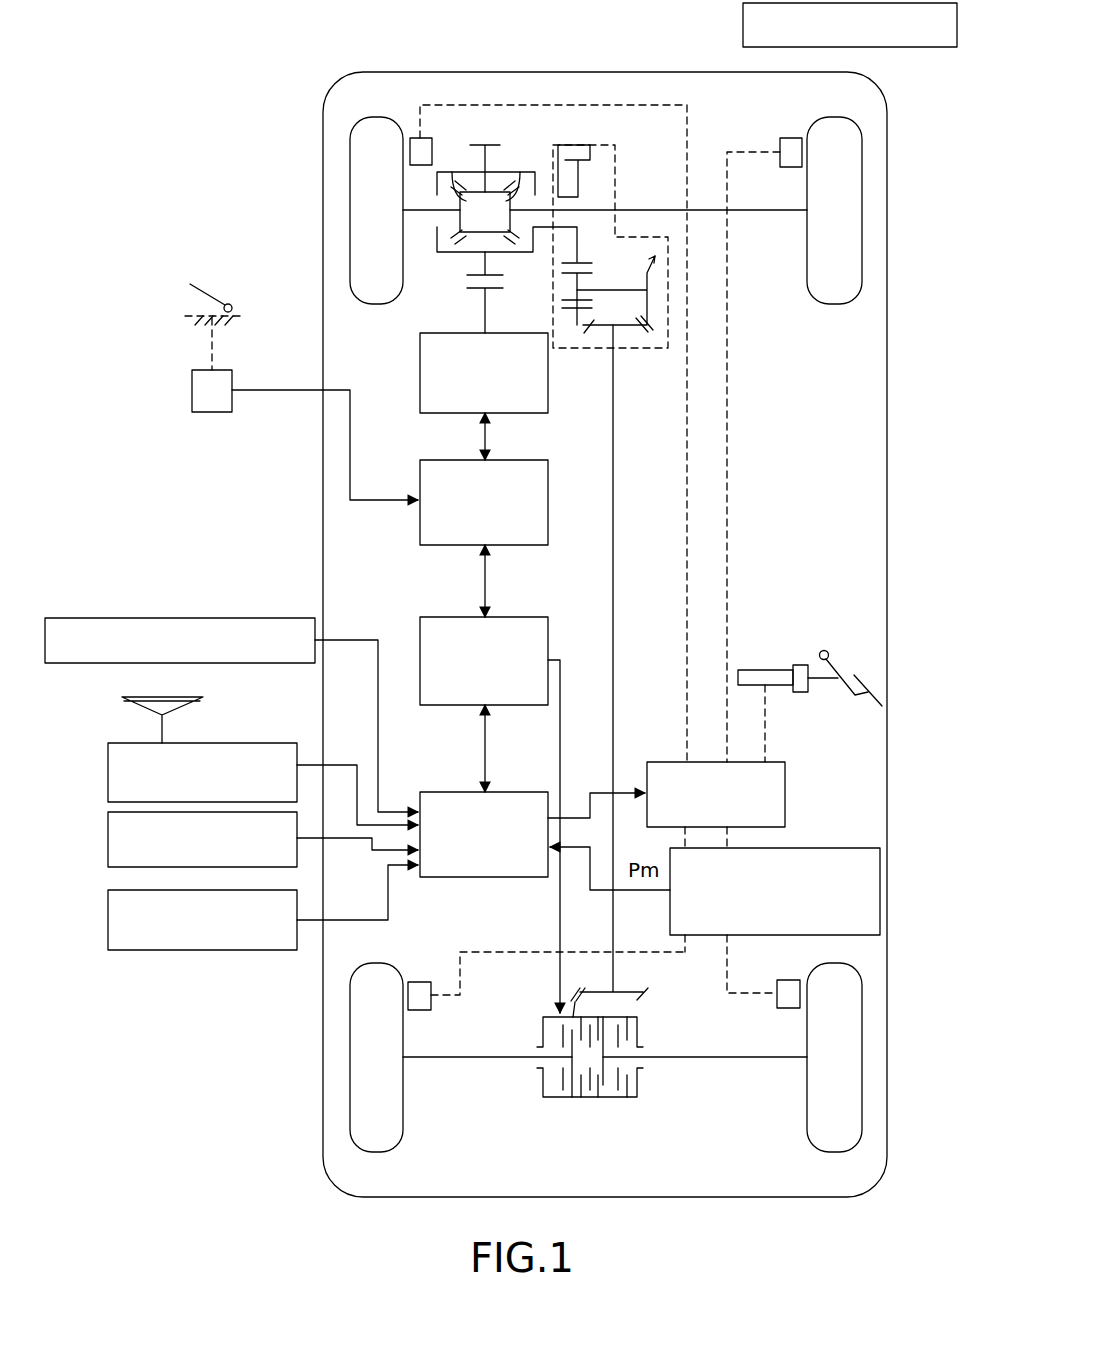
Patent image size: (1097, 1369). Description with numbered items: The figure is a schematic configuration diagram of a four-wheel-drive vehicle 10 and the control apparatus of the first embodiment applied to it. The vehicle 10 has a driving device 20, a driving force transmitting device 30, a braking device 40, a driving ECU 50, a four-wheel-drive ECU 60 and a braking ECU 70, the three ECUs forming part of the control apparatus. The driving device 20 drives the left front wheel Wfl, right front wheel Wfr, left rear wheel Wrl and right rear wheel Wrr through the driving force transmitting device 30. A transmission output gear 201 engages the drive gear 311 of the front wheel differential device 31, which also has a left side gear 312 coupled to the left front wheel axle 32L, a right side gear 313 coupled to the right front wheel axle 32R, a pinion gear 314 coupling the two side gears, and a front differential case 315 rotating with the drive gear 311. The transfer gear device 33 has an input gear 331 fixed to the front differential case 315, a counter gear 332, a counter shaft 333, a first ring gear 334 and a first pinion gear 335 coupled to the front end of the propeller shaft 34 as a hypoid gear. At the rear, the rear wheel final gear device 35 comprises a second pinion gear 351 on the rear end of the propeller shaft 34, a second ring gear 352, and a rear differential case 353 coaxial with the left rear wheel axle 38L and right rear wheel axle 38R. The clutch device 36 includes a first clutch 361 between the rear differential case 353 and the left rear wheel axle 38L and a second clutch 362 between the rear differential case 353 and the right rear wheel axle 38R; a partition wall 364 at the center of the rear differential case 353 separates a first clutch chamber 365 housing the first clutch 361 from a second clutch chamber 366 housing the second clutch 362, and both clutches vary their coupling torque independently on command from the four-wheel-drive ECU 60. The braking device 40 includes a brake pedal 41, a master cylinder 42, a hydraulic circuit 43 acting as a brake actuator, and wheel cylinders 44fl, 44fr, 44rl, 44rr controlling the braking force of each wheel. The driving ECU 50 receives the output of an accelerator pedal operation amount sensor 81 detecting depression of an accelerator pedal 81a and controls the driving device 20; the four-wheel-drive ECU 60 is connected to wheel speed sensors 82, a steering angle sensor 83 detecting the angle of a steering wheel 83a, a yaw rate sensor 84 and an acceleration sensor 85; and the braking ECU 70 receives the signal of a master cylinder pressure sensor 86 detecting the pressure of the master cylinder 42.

The vehicle 10 is at (664, 55).
The driving device 20 is at (417, 382).
The transmission output gear 201 is at (478, 292).
The driving force transmitting device 30 is at (743, 366).
The front wheel differential device 31 is at (551, 398).
The drive gear 311 is at (485, 143).
The left side gear 312 is at (449, 172).
The right side gear 313 is at (503, 188).
The pinion gear 314 is at (518, 127).
The front differential case 315 is at (524, 253).
The left front wheel axle 32L is at (420, 213).
The right front wheel axle 32R is at (773, 213).
The transfer gear device 33 is at (666, 252).
The input gear 331 is at (584, 149).
The counter gear 332 is at (573, 312).
The counter shaft 333 is at (608, 289).
The first ring gear 334 is at (650, 302).
The first pinion gear 335 is at (626, 330).
The propeller shaft 34 is at (615, 547).
The rear wheel final gear device 35 is at (574, 955).
The second pinion gear 351 is at (594, 988).
The second ring gear 352 is at (574, 988).
The rear differential case 353 is at (556, 1010).
The clutch device 36 is at (594, 1091).
The first clutch 361 is at (548, 1093).
The second clutch 362 is at (630, 1095).
The partition wall 364 is at (590, 1100).
The first clutch chamber 365 is at (548, 1025).
The second clutch chamber 366 is at (630, 1027).
The left rear wheel axle 38L is at (433, 1060).
The right rear wheel axle 38R is at (757, 1060).
The braking device 40 is at (793, 702).
The brake pedal 41 is at (868, 687).
The master cylinder 42 is at (766, 670).
The hydraulic circuit 43 is at (790, 773).
The wheel cylinder 44fl is at (417, 138).
The wheel cylinder 44fr is at (786, 138).
The wheel cylinder 44rl is at (416, 980).
The wheel cylinder 44rr is at (790, 1009).
The driving ECU 50 is at (430, 462).
The 4WD ECU 60 is at (430, 618).
The braking ECU 70 is at (465, 793).
The accelerator pedal operation amount sensor 81 is at (190, 385).
The accelerator pedal 81a is at (215, 290).
The wheel speed sensors 82 is at (180, 618).
The steering angle sensor 83 is at (108, 768).
The steering wheel 83a is at (125, 702).
The yaw rate sensor 84 is at (108, 835).
The acceleration sensor 85 is at (108, 920).
The master cylinder pressure sensor 86 is at (813, 846).
The left front wheel Wfl is at (350, 210).
The right front wheel Wfr is at (862, 208).
The left rear wheel Wrl is at (350, 1057).
The right rear wheel Wrr is at (862, 1057).